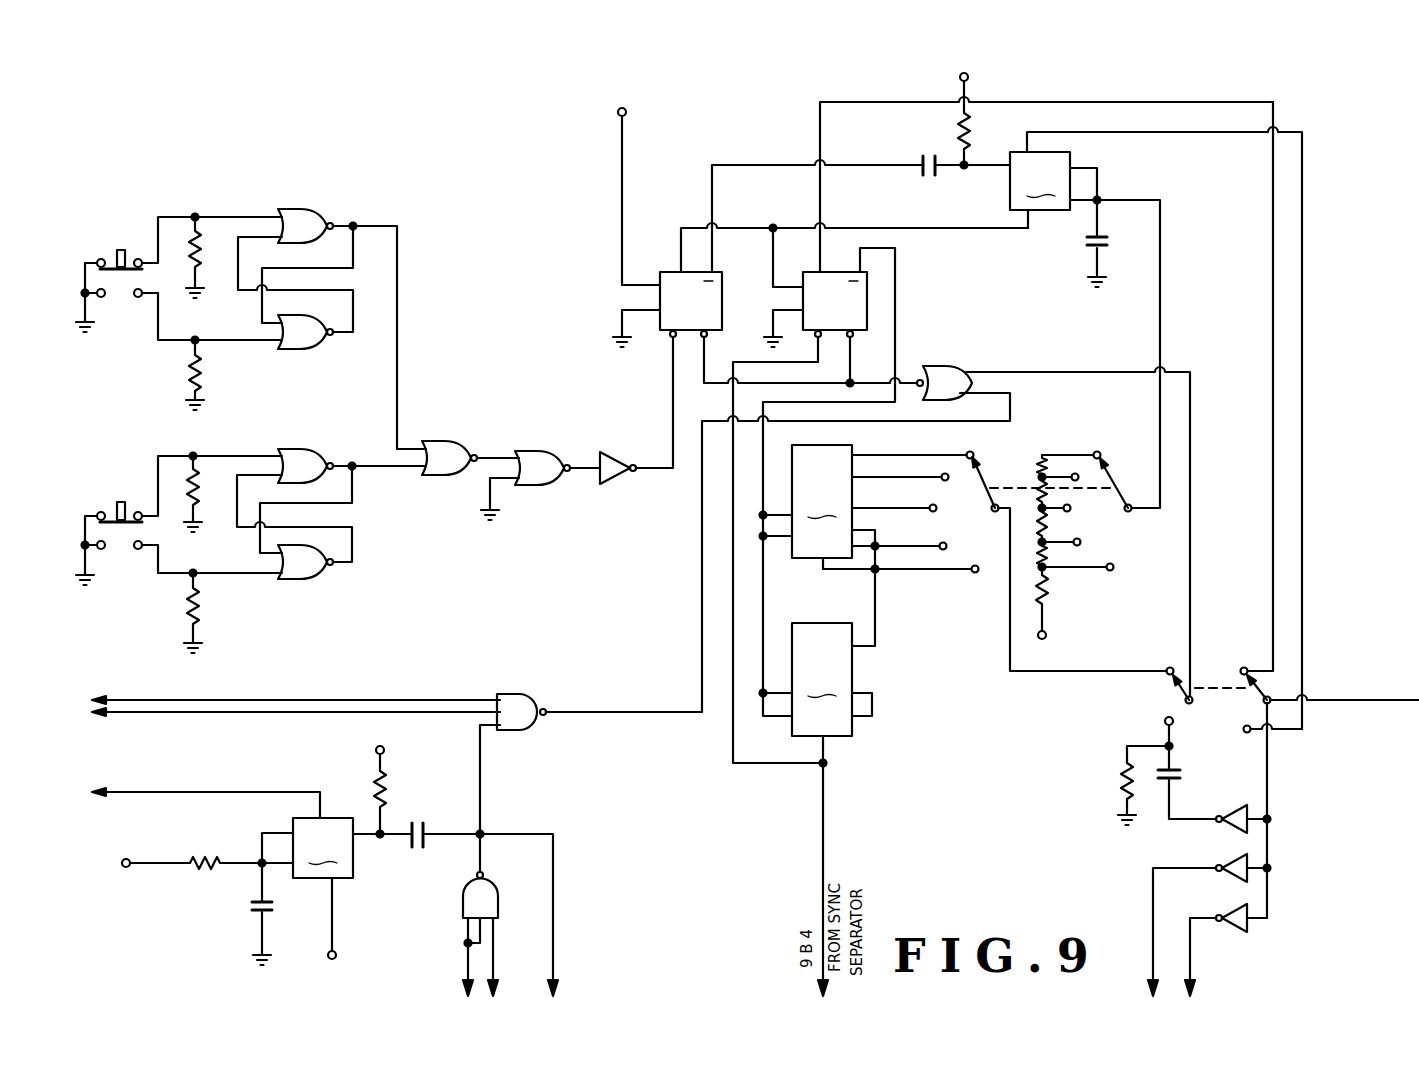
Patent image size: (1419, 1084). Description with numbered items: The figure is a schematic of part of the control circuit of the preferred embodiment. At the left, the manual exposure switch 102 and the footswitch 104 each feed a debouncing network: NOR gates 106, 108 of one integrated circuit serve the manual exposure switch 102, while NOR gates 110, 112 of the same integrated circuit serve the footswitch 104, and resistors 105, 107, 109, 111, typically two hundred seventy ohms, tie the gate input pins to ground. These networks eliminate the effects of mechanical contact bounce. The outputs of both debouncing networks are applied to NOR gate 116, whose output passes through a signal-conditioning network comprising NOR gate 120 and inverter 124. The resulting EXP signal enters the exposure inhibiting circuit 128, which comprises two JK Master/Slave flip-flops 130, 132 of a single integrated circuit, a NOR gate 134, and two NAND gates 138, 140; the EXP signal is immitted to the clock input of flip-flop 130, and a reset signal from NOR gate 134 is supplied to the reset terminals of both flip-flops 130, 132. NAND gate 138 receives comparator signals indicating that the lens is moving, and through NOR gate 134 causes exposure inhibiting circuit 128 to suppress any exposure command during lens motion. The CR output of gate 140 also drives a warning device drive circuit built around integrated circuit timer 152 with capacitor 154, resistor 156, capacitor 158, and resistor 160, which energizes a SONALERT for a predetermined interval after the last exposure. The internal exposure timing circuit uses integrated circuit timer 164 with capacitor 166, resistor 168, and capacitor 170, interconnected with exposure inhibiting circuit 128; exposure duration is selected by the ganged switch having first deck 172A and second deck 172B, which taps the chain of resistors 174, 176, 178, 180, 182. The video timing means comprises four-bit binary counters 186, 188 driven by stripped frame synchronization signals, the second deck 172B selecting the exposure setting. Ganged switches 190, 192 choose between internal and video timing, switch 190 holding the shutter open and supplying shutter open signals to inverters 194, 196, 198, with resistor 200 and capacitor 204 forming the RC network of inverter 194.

The manual exposure switch 102 is at (118, 248).
The footswitch 104 is at (119, 501).
The resistor 105 is at (202, 263).
The NOR gate 106 is at (303, 213).
The resistor 107 is at (190, 378).
The NOR gate 108 is at (306, 349).
The resistor 109 is at (202, 492).
The NOR gate 110 is at (296, 449).
The resistor 111 is at (190, 608).
The NOR gate 112 is at (306, 579).
The NOR gate 116 is at (447, 441).
The NOR gate 120 is at (530, 451).
The inverter 124 is at (614, 452).
The exposure inhibiting circuit 128 is at (755, 134).
The JK Master/Slave flip-flop 130 is at (660, 272).
The JK Master/Slave flip-flop 132 is at (806, 272).
The NOR gate 134 is at (944, 367).
The NAND gate 138 is at (522, 695).
The NAND gate 140 is at (500, 898).
The integrated circuit timer 152 is at (252, 880).
The capacitor 154 is at (424, 823).
The resistor 156 is at (385, 791).
The capacitor 158 is at (250, 906).
The resistor 160 is at (209, 857).
The integrated circuit timer 164 is at (1149, 428).
The capacitor 166 is at (1083, 250).
The resistor 168 is at (958, 131).
The capacitor 170 is at (929, 176).
The first deck 172A is at (1118, 518).
The second deck 172B is at (957, 552).
The resistor 174 is at (1042, 457).
The resistor 176 is at (1036, 480).
The resistor 178 is at (1040, 520).
The resistor 180 is at (1047, 559).
The resistor 182 is at (1054, 600).
The four-bit binary counter 186 is at (866, 543).
The four-bit binary counter 188 is at (816, 809).
The switch 190 is at (1252, 701).
The switch 192 is at (1180, 686).
The inverter 194 is at (1224, 829).
The inverter 196 is at (1224, 879).
The inverter 198 is at (1236, 933).
The resistor 200 is at (1129, 774).
The capacitor 204 is at (1182, 775).